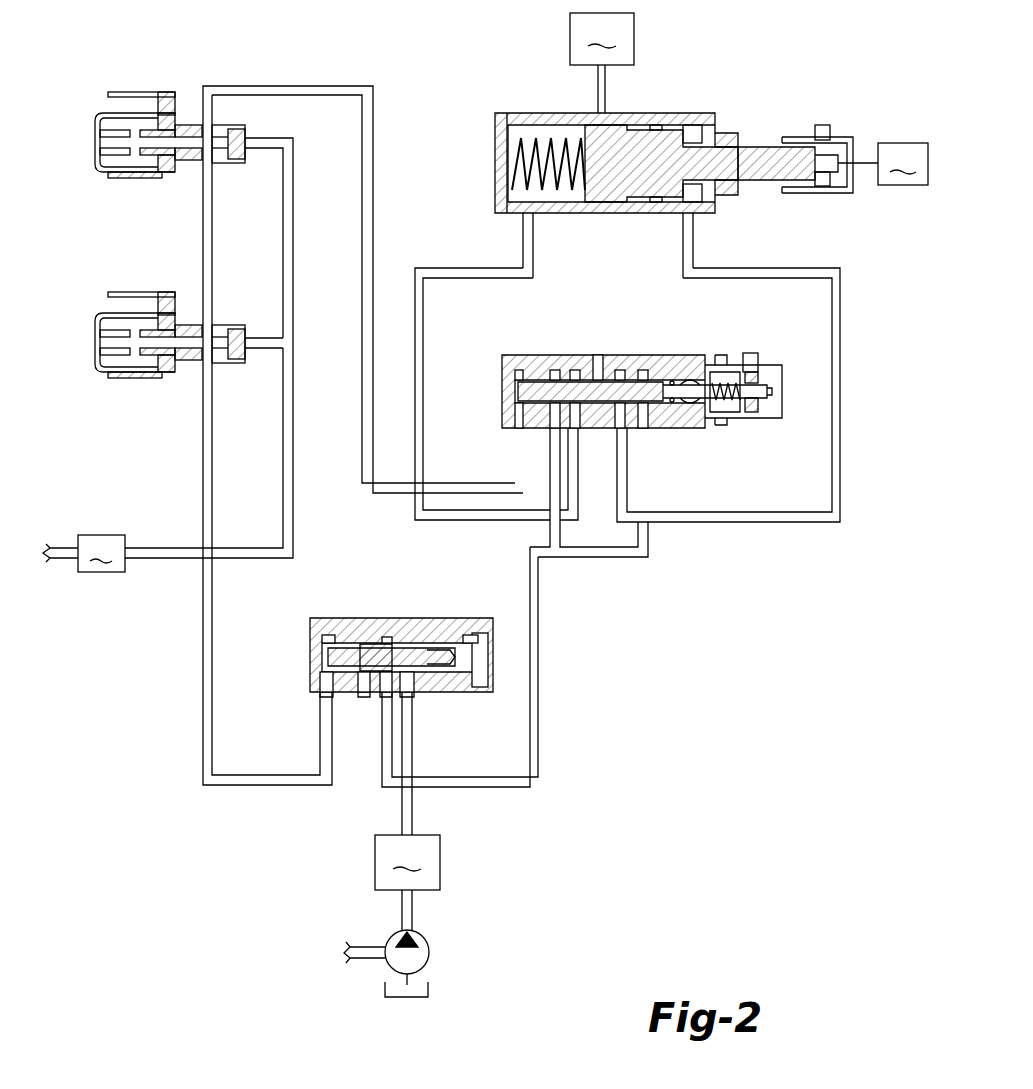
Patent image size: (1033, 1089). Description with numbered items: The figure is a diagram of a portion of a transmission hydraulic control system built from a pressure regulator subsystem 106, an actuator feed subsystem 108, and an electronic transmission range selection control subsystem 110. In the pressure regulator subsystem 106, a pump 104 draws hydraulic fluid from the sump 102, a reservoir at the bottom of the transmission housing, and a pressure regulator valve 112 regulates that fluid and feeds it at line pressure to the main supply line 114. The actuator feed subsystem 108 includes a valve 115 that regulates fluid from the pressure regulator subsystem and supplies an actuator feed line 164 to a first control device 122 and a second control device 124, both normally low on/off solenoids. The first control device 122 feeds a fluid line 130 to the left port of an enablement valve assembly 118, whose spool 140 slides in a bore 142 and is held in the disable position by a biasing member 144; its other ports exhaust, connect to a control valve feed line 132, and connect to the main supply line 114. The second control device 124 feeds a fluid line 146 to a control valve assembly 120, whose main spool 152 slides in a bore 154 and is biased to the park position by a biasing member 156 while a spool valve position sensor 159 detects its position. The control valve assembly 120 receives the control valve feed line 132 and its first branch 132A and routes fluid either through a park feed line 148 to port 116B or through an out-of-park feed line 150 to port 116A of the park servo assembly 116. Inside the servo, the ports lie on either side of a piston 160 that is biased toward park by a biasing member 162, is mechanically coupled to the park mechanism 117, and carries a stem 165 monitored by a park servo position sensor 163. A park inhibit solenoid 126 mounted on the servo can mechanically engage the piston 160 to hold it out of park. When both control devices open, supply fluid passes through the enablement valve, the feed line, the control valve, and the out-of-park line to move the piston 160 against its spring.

The sump 102 is at (430, 995).
The pump 104 is at (430, 938).
The pressure regulator subsystem 106 is at (451, 944).
The actuator feed subsystem 108 is at (107, 577).
The electronic transmission range selection (ETRS) control subsystem 110 is at (703, 762).
The pressure regulator valve 112 is at (407, 862).
The main supply line 114 is at (410, 752).
The valve 115 is at (84, 553).
The park servo assembly 116 is at (644, 132).
The port 116A is at (680, 212).
The port 116B is at (540, 213).
The park mechanism 117 is at (883, 164).
The enablement valve assembly 118 is at (361, 661).
The control valve assembly 120 is at (643, 391).
The first control device 122 is at (150, 378).
The second control device 124 is at (135, 113).
The park inhibit solenoid 126 is at (602, 63).
The fluid line 130 is at (202, 694).
The control valve feed line 132 is at (540, 700).
The first branch 132A is at (550, 533).
The spool 140 is at (408, 655).
The bore 142 is at (325, 640).
The biasing member 144 is at (470, 638).
The fluid line 146 is at (296, 86).
The park feed line 148 is at (415, 330).
The out-of-park feed line 150 is at (842, 302).
The main spool 152 is at (655, 385).
The bore 154 is at (703, 420).
The biasing member 156 is at (727, 408).
The spool valve position sensor 159 is at (768, 355).
The piston 160 is at (637, 132).
The biasing member 162 is at (520, 187).
The park servo position sensor 163 is at (838, 128).
The actuator feed line 164 is at (297, 428).
The stem 165 is at (755, 145).